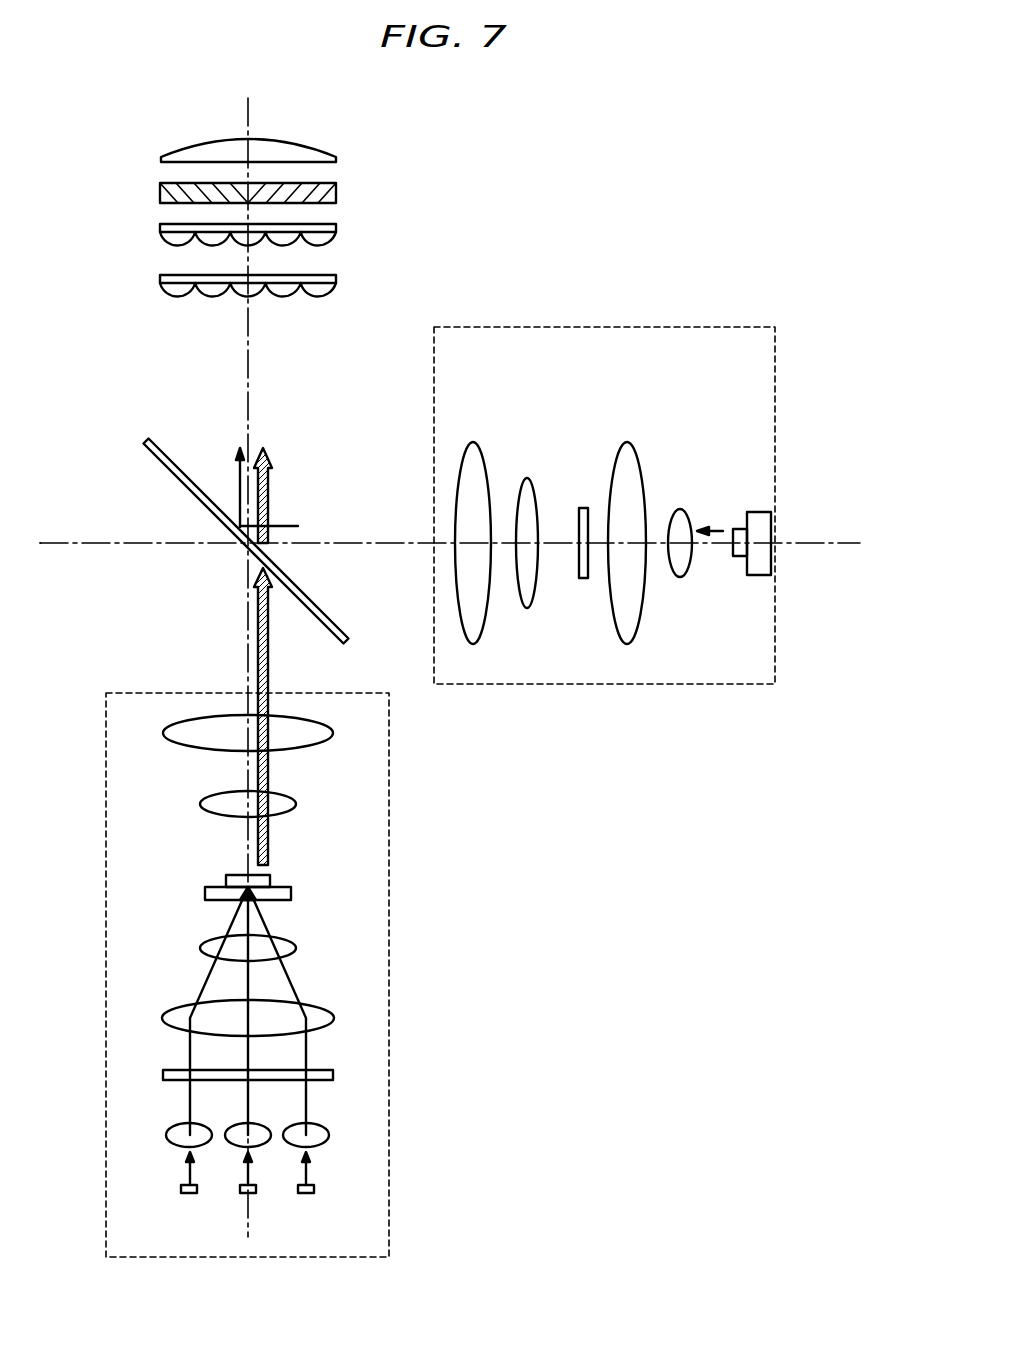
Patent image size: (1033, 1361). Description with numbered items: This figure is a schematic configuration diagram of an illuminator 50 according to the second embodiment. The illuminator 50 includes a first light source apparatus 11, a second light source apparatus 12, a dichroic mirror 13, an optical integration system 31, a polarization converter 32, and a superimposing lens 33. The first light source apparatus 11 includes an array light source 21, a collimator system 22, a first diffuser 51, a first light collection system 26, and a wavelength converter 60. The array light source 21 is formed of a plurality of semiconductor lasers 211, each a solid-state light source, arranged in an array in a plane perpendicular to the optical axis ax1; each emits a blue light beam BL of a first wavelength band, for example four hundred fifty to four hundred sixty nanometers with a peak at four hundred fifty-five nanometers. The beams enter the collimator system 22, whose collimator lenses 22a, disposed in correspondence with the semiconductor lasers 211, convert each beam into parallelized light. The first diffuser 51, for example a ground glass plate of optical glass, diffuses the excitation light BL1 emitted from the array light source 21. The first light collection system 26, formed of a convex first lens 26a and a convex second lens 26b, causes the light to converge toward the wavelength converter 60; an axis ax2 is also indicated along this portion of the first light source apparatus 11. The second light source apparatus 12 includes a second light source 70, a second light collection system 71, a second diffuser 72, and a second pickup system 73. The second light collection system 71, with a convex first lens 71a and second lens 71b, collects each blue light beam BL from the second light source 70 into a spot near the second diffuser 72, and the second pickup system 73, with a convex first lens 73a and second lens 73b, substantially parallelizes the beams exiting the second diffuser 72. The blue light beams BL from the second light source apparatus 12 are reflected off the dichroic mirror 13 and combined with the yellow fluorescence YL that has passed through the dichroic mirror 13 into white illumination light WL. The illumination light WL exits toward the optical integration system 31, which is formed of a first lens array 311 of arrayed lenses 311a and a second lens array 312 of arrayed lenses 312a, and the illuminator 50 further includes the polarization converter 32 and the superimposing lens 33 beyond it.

The first light source apparatus 11 is at (105, 795).
The second light source apparatus 12 is at (678, 684).
The dichroic mirror 13 is at (323, 615).
The array light source 21 is at (325, 1190).
The semiconductor laser 211 is at (308, 1195).
The collimator system 22 is at (335, 1143).
The collimator lens 22a is at (172, 1140).
The first light collection system 26 is at (465, 735).
The first lens 26a is at (287, 813).
The second lens 26b is at (323, 745).
The optical integration system 31 is at (428, 217).
The first lens array 311 is at (332, 287).
The lens 311a is at (177, 288).
The second lens array 312 is at (330, 243).
The lens 312a is at (177, 238).
The polarization converter 32 is at (332, 180).
The superimposing lens 33 is at (307, 145).
The illuminator 50 is at (603, 232).
The first diffuser 51 is at (333, 1074).
The wavelength converter 60 is at (320, 893).
The second light source 70 is at (758, 494).
The second light collection system 71 is at (706, 387).
The first lens 71a is at (686, 509).
The second lens 71b is at (625, 442).
The second diffuser 72 is at (582, 506).
The second pickup system 73 is at (569, 387).
The first lens 73a is at (528, 483).
The second lens 73b is at (488, 477).
The blue light beam BL is at (239, 480).
The excitation light BL1 is at (205, 983).
The yellow fluorescence YL is at (260, 447).
The white illumination light WL is at (240, 370).
The optical axis ax1 is at (808, 540).
The optical axis ax2 is at (247, 1223).